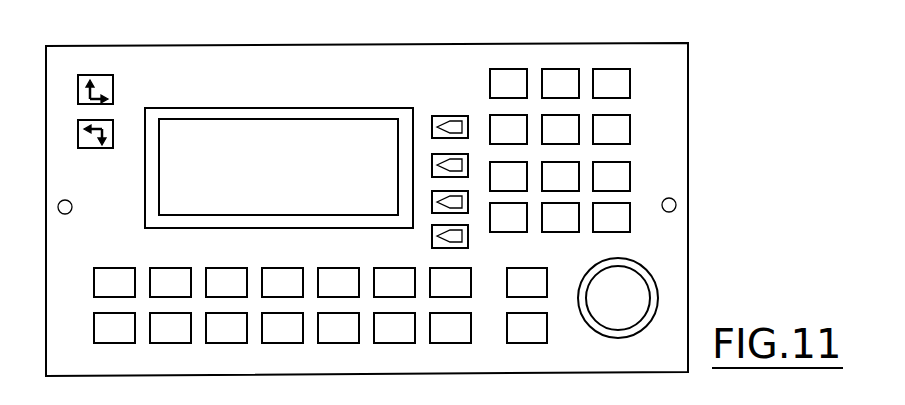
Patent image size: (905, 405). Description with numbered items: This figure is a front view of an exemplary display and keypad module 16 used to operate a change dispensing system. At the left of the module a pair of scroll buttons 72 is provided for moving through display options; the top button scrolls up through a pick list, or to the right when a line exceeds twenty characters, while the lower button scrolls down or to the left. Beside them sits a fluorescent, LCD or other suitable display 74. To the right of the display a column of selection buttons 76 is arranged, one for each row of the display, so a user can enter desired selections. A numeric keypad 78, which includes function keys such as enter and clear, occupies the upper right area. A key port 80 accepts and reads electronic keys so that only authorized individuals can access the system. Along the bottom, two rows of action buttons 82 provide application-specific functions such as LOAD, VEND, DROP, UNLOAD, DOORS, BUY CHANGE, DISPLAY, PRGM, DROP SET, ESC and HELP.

The display and keypad module 16 is at (700, 79).
The scroll buttons 72 is at (117, 121).
The display 74 is at (326, 108).
The selection buttons 76 is at (474, 234).
The numeric keypad 78 is at (561, 62).
The key port 80 is at (657, 277).
The action buttons 82 is at (296, 268).